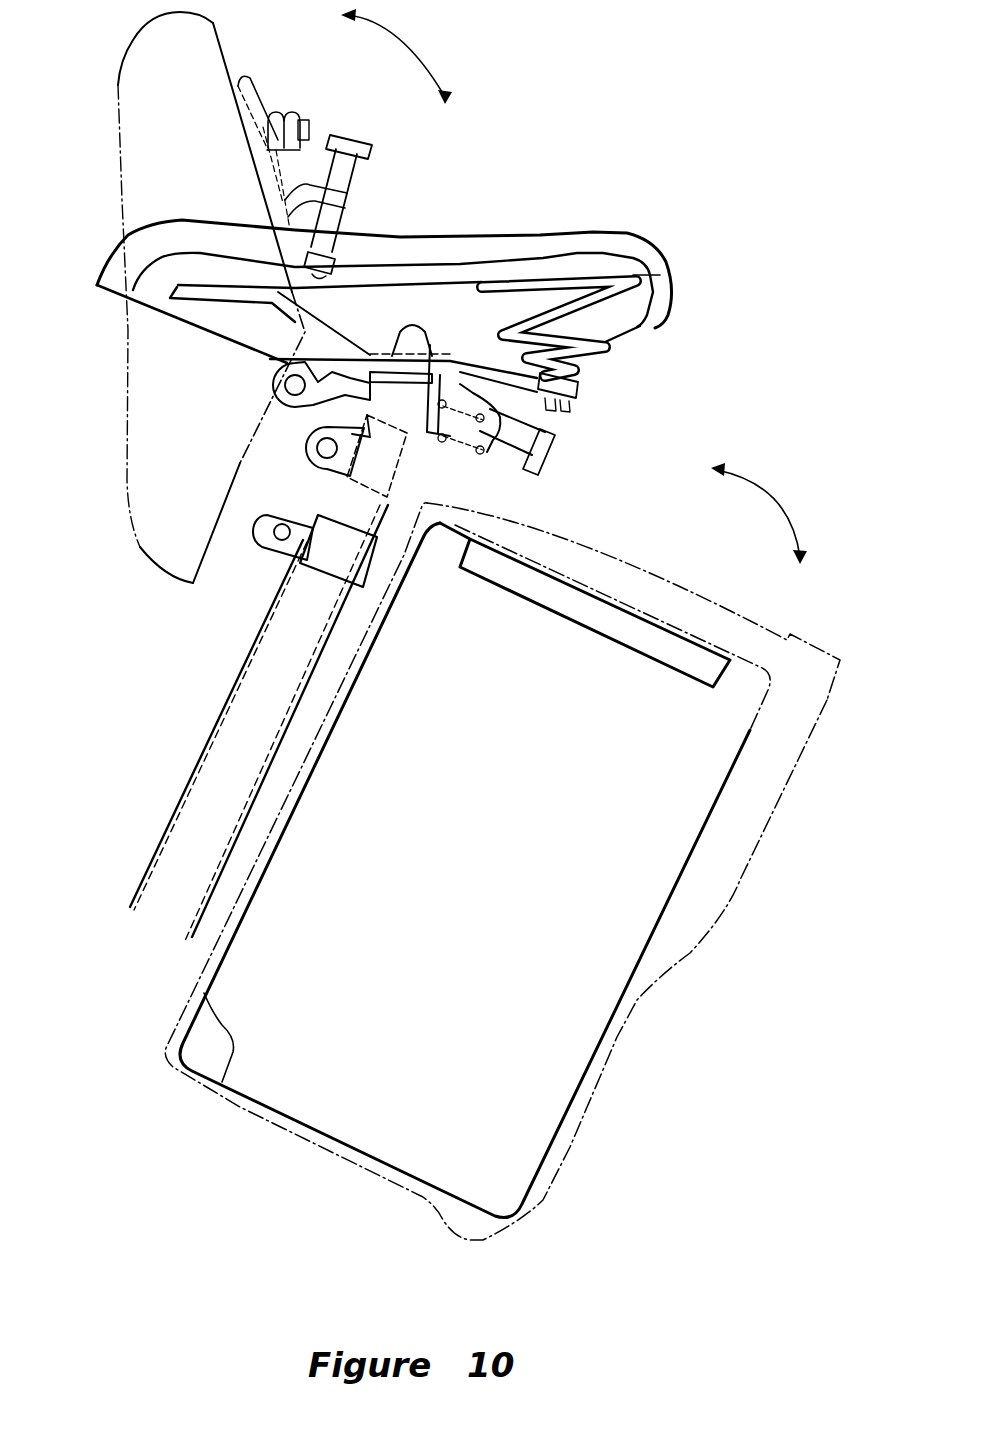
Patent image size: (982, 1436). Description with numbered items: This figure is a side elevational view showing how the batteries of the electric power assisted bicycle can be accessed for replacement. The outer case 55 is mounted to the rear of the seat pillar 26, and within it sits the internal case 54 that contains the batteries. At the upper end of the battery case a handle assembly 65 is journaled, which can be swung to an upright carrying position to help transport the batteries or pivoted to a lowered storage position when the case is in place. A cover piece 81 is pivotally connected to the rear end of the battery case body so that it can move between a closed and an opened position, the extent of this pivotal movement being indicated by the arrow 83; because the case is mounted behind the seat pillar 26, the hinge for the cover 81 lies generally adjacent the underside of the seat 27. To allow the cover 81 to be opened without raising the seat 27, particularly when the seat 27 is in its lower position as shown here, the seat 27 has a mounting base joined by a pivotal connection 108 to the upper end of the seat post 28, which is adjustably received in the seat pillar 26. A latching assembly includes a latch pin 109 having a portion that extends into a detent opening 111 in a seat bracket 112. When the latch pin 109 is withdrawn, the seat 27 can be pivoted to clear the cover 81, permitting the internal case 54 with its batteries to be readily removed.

The seat pillar 26 is at (187, 783).
The seat 27 is at (543, 233).
The seat post 28 is at (320, 508).
The internal case 54 is at (660, 931).
The outer case 55 is at (768, 840).
The handle assembly 65 is at (630, 652).
The cover piece 81 is at (692, 597).
The arrow 83 is at (787, 490).
The pivotal connection 108 is at (277, 405).
The latch pin 109 is at (555, 450).
The detent opening 111 is at (410, 472).
The seat bracket 112 is at (437, 345).